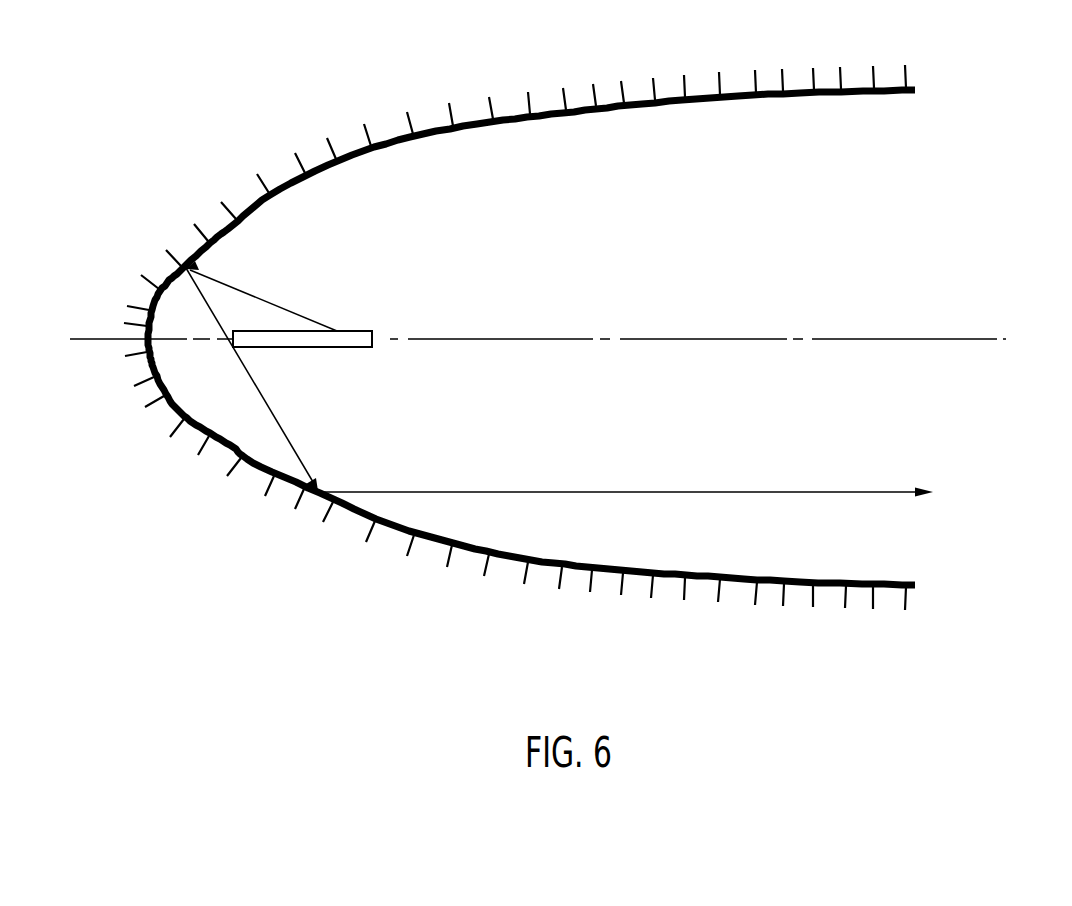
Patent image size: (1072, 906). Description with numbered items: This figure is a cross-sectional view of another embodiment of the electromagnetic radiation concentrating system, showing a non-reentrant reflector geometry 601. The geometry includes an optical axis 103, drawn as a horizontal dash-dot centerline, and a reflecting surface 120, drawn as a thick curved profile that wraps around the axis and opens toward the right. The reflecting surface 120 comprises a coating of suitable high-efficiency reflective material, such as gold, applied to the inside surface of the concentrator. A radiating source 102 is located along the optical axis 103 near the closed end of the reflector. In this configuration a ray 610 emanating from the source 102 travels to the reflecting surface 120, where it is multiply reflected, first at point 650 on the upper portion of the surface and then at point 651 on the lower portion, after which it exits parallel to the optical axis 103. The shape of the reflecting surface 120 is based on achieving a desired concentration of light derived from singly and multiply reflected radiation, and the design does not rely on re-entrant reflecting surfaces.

The radiating source 102 is at (325, 350).
The optical axis 103 is at (712, 340).
The reflecting surface 120 is at (585, 562).
The non-reentrant reflector geometry 601 is at (227, 218).
The ray 610 is at (790, 490).
The reflection point 650 is at (182, 277).
The reflection point 651 is at (325, 483).